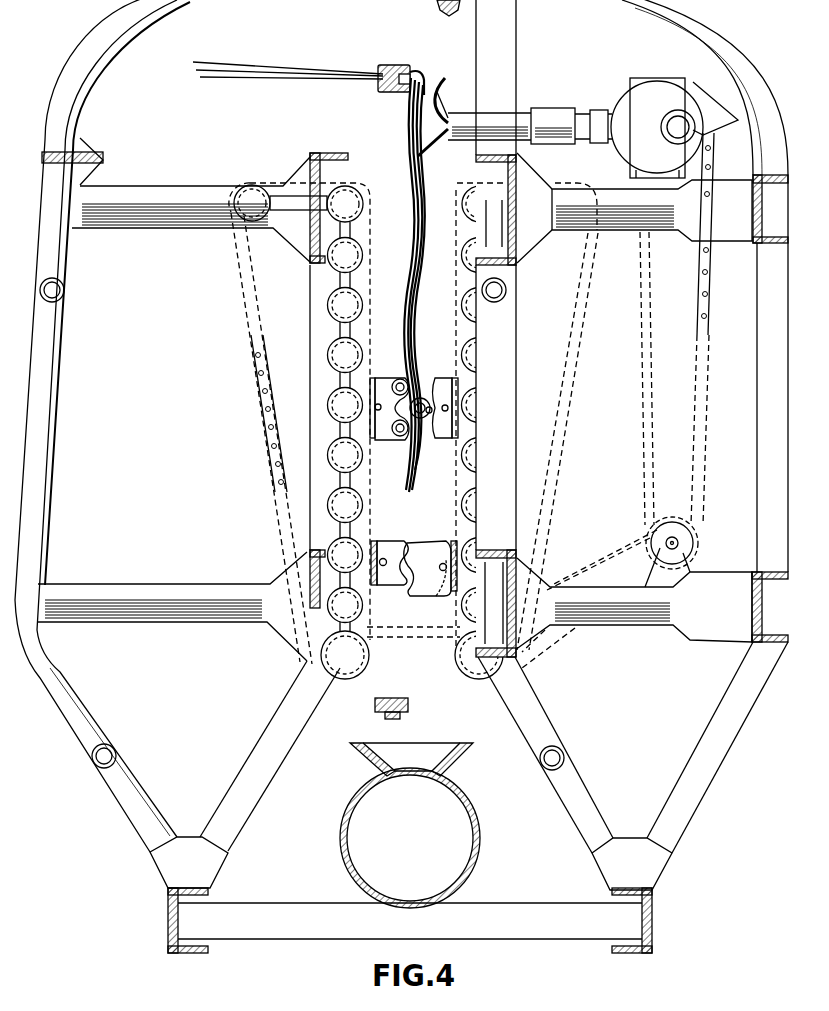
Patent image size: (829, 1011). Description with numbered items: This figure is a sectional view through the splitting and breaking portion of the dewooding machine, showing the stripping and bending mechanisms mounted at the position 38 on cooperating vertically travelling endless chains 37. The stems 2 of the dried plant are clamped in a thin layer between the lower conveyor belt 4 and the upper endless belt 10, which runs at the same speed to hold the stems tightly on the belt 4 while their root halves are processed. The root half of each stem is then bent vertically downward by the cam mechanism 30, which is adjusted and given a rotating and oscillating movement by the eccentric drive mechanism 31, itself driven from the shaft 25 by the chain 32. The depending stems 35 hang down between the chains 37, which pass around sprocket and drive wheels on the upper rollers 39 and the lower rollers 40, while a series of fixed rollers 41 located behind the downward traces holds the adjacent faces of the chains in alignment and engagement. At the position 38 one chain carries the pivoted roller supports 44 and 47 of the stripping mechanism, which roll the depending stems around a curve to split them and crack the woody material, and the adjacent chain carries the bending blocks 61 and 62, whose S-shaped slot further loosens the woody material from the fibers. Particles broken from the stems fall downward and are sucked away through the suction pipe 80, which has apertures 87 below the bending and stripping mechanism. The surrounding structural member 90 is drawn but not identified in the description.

The stems 2 is at (236, 72).
The lower conveyor belt 4 is at (388, 91).
The endless belt 10 is at (388, 64).
The shaft 25 is at (698, 543).
The cam mechanism 30 is at (454, 98).
The eccentric drive mechanism 31 is at (634, 103).
The chain 32 is at (705, 297).
The depending stems 35 is at (424, 228).
The endless chain 37 is at (371, 276).
The mounting position of stripping and bending mechanism 38 is at (381, 157).
The rollers with sprocket and drive wheels 39 is at (352, 203).
The rollers with sprocket and drive wheels 40 is at (455, 669).
The fixed rollers 41 is at (330, 320).
The support 44 is at (388, 385).
The support 47 is at (442, 386).
The block 61 is at (390, 548).
The block 62 is at (431, 548).
The suction pipe 80 is at (423, 857).
The apertures 87 is at (455, 762).
The frame 90 is at (58, 465).